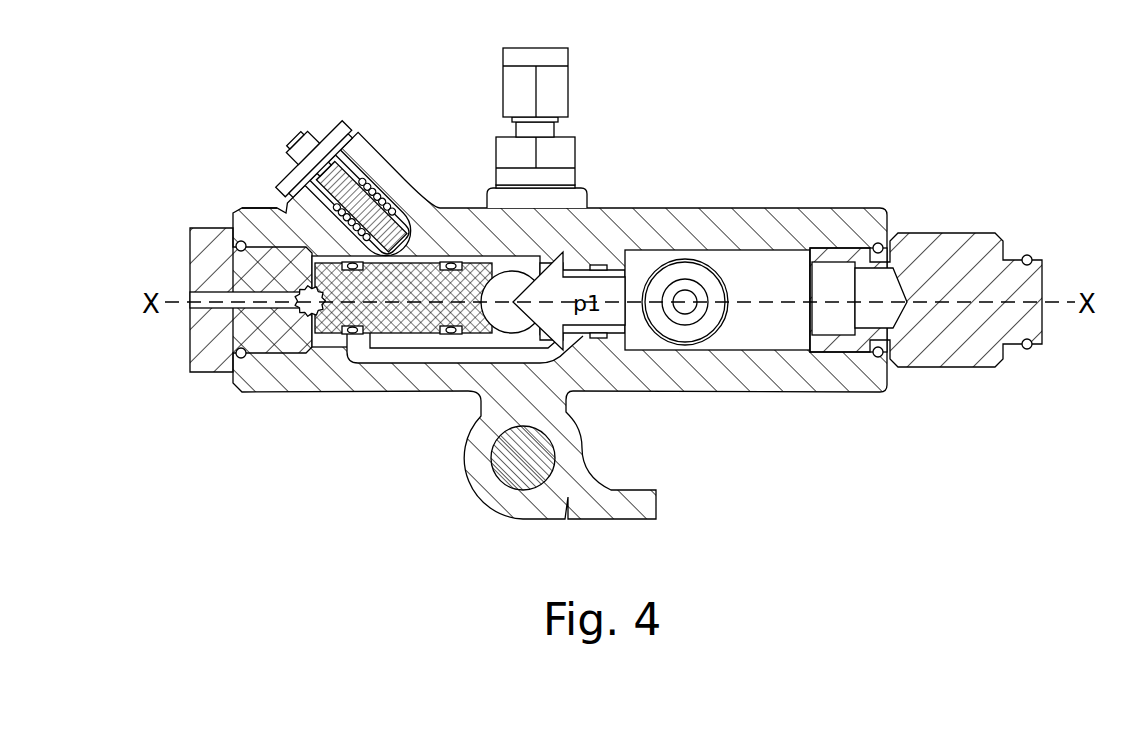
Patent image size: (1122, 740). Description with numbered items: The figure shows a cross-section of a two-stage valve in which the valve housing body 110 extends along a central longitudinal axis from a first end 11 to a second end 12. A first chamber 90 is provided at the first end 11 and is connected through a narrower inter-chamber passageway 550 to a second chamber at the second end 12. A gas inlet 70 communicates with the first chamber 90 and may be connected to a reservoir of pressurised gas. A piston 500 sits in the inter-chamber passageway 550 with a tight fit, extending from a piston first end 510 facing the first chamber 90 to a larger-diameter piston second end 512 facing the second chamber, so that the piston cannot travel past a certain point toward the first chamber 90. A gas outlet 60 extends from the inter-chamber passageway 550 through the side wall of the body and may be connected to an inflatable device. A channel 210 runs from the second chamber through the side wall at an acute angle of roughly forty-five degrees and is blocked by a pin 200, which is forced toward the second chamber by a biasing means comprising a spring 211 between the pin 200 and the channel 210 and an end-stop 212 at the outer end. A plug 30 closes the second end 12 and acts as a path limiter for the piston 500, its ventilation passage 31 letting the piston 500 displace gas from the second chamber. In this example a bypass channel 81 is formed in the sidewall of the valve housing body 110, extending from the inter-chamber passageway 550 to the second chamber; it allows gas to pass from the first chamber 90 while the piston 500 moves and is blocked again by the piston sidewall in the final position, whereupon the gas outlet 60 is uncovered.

The first end 11 is at (885, 210).
The second end 12 is at (233, 213).
The plug 30 is at (202, 362).
The ventilation passage 31 is at (208, 308).
The gas outlet 60 is at (510, 287).
The gas inlet 70 is at (697, 297).
The bypass channel 81 is at (415, 358).
The first chamber 90 is at (785, 318).
The valve housing body 110 is at (865, 377).
The pin 200 is at (348, 188).
The channel 210 is at (387, 200).
The spring 211 is at (432, 215).
The end-stop 212 is at (370, 187).
The piston 500 is at (383, 328).
The piston first end 510 is at (492, 332).
The piston second end 512 is at (307, 333).
The inter-chamber passageway 550 is at (587, 268).